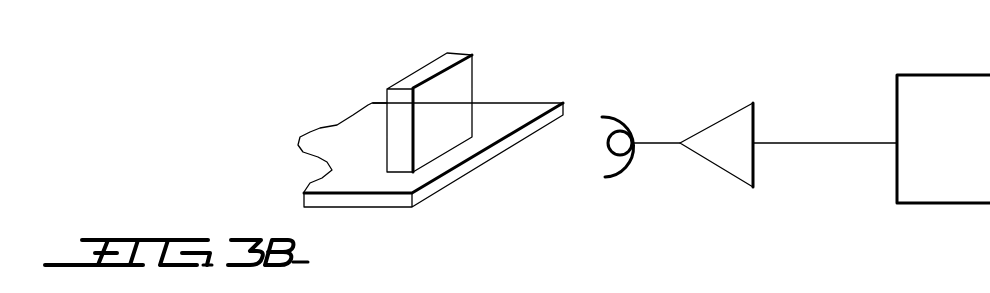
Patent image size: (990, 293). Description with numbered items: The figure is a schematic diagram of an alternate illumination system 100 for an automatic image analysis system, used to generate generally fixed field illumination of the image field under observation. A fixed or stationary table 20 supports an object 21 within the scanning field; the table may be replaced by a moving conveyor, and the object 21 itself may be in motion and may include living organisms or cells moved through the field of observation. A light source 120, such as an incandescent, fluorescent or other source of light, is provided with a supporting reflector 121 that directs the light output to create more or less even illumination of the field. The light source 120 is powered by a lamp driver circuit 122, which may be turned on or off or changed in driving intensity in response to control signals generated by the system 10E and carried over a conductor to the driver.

The table 20 is at (513, 103).
The object 21 is at (438, 60).
The illumination system 100 is at (347, 110).
The light source 120 is at (612, 155).
The supporting reflector 121 is at (620, 120).
The lamp driver circuit 122 is at (727, 103).
The system 10E is at (976, 150).